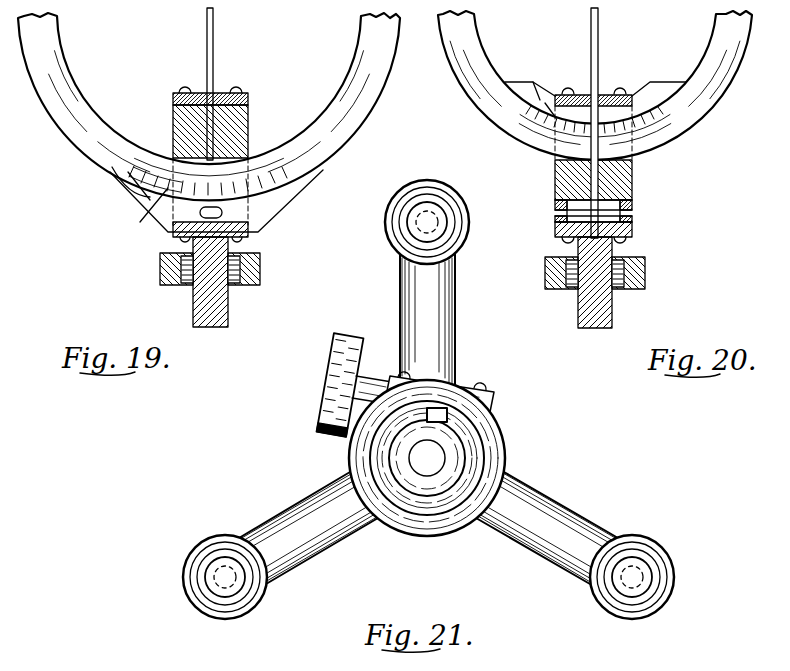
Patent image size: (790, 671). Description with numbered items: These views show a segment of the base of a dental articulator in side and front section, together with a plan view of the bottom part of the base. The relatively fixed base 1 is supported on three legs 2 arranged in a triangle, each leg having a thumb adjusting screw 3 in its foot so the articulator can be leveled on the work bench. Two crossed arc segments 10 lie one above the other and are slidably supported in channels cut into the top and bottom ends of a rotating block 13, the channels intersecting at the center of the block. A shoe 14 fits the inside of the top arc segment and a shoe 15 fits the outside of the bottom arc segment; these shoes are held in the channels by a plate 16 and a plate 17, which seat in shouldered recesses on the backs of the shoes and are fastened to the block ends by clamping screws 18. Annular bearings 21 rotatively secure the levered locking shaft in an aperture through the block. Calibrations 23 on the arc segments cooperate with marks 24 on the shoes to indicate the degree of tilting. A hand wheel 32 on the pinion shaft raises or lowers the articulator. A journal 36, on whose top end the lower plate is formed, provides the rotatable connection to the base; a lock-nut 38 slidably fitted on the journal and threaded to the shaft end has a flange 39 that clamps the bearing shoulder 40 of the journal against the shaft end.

In FIG. 21, the base 1 is at (500, 438).
In FIG. 21, the legs 2 is at (456, 338).
In FIG. 21, the thumb adjusting screws 3 is at (412, 230).
In FIG. 19, the arc segments 10 is at (207, 36).
In FIG. 20, the arc segments 10 is at (591, 31).
In FIG. 19, the rotating block 13 is at (249, 131).
In FIG. 20, the rotating block 13 is at (620, 180).
In FIG. 19, the shoe 14 is at (285, 197).
In FIG. 20, the shoe 15 is at (660, 90).
In FIG. 19, the plate 16 is at (217, 95).
In FIG. 20, the plate 16 is at (607, 95).
In FIG. 19, the plate 17 is at (180, 238).
In FIG. 20, the plate 17 is at (557, 233).
In FIG. 19, the clamping screws 18 is at (182, 90).
In FIG. 20, the clamping screws 18 is at (568, 88).
In FIG. 20, the annular bearings 21 is at (555, 205).
In FIG. 19, the calibrations 23 is at (130, 196).
In FIG. 20, the calibrations 23 is at (556, 118).
In FIG. 19, the marks 24 is at (140, 222).
In FIG. 20, the marks 24 is at (537, 100).
In FIG. 21, the hand wheel 32 is at (342, 388).
In FIG. 19, the journal 36 is at (196, 312).
In FIG. 20, the journal 36 is at (592, 305).
In FIG. 19, the lock-nut 38 is at (250, 285).
In FIG. 20, the lock-nut 38 is at (548, 278).
In FIG. 19, the flange 39 is at (163, 262).
In FIG. 20, the flange 39 is at (620, 258).
In FIG. 19, the bearing shoulder 40 is at (183, 284).
In FIG. 20, the bearing shoulder 40 is at (622, 289).